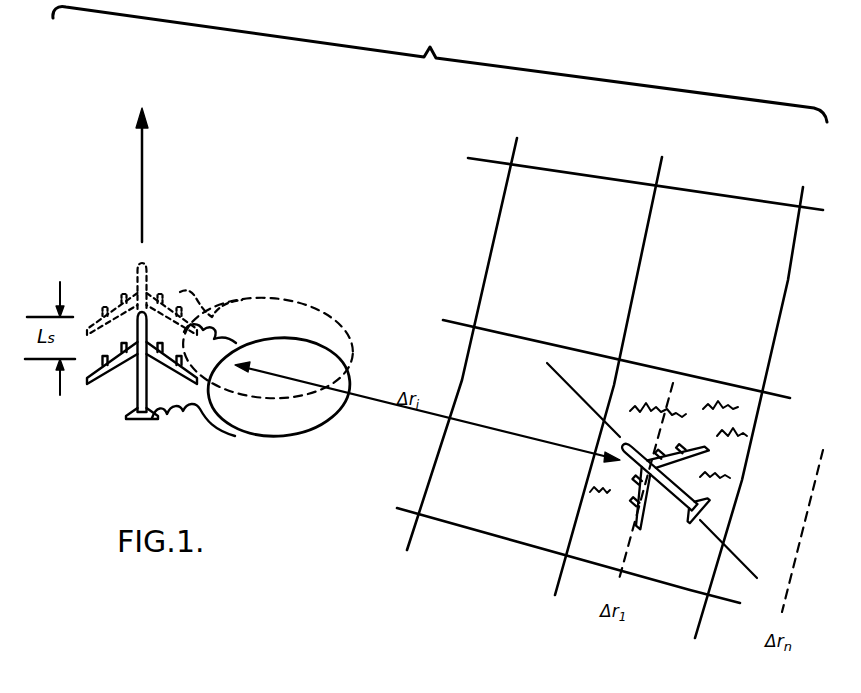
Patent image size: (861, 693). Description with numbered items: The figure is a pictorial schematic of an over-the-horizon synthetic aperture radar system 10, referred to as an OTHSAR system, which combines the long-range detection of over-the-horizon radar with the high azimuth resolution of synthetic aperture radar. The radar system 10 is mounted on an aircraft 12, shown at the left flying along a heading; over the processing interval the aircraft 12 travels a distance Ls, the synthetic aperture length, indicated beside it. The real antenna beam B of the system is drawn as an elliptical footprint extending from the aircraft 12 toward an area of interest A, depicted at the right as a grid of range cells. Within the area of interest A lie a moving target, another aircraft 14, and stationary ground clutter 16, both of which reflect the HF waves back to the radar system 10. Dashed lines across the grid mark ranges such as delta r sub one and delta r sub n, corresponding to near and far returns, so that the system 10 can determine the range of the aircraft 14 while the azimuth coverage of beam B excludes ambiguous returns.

The radar system 10 is at (67, 427).
The aircraft 12 is at (104, 386).
The aircraft 14 is at (641, 512).
The ground clutter 16 is at (738, 426).
The area of interest A is at (731, 187).
The real antenna beam B is at (285, 437).